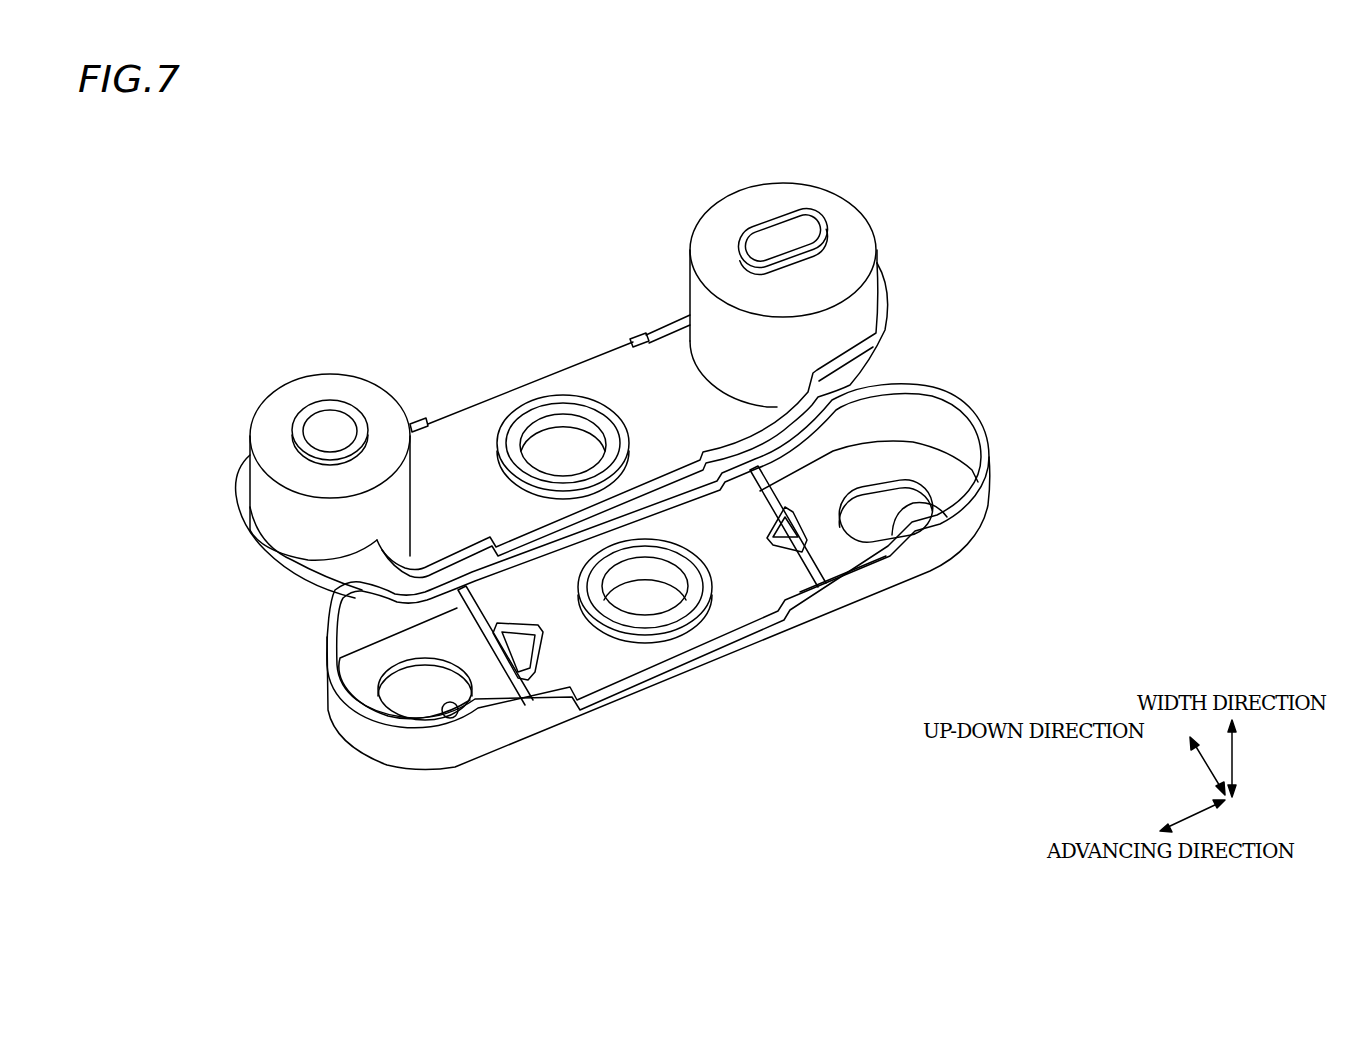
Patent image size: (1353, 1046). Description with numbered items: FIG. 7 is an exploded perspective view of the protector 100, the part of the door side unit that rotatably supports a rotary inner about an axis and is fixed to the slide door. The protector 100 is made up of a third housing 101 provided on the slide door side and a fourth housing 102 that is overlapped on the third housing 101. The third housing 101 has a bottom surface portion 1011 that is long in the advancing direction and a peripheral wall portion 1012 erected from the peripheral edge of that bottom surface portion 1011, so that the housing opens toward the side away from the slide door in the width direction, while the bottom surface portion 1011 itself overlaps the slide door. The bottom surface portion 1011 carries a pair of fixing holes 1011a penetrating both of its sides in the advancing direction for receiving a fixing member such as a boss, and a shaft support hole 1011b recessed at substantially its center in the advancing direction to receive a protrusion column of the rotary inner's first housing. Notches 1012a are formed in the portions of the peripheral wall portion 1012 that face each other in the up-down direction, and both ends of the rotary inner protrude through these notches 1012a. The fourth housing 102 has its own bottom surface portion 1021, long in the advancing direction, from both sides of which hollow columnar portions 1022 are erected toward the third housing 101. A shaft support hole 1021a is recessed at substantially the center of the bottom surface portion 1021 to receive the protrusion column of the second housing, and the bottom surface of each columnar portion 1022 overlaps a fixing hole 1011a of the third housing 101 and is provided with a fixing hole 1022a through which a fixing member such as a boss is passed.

The protector 100 is at (1035, 820).
The third housing 101 is at (981, 386).
The fourth housing 102 is at (882, 192).
The bottom surface portion 1011 is at (594, 668).
The fixing holes 1011a is at (450, 710).
The shaft support hole 1011b is at (657, 611).
The peripheral wall portion 1012 is at (397, 753).
The notches 1012a is at (862, 572).
The bottom surface portion 1021 is at (627, 348).
The shaft support hole 1021a is at (562, 442).
The columnar portions 1022 is at (812, 192).
The fixing hole 1022a is at (778, 232).